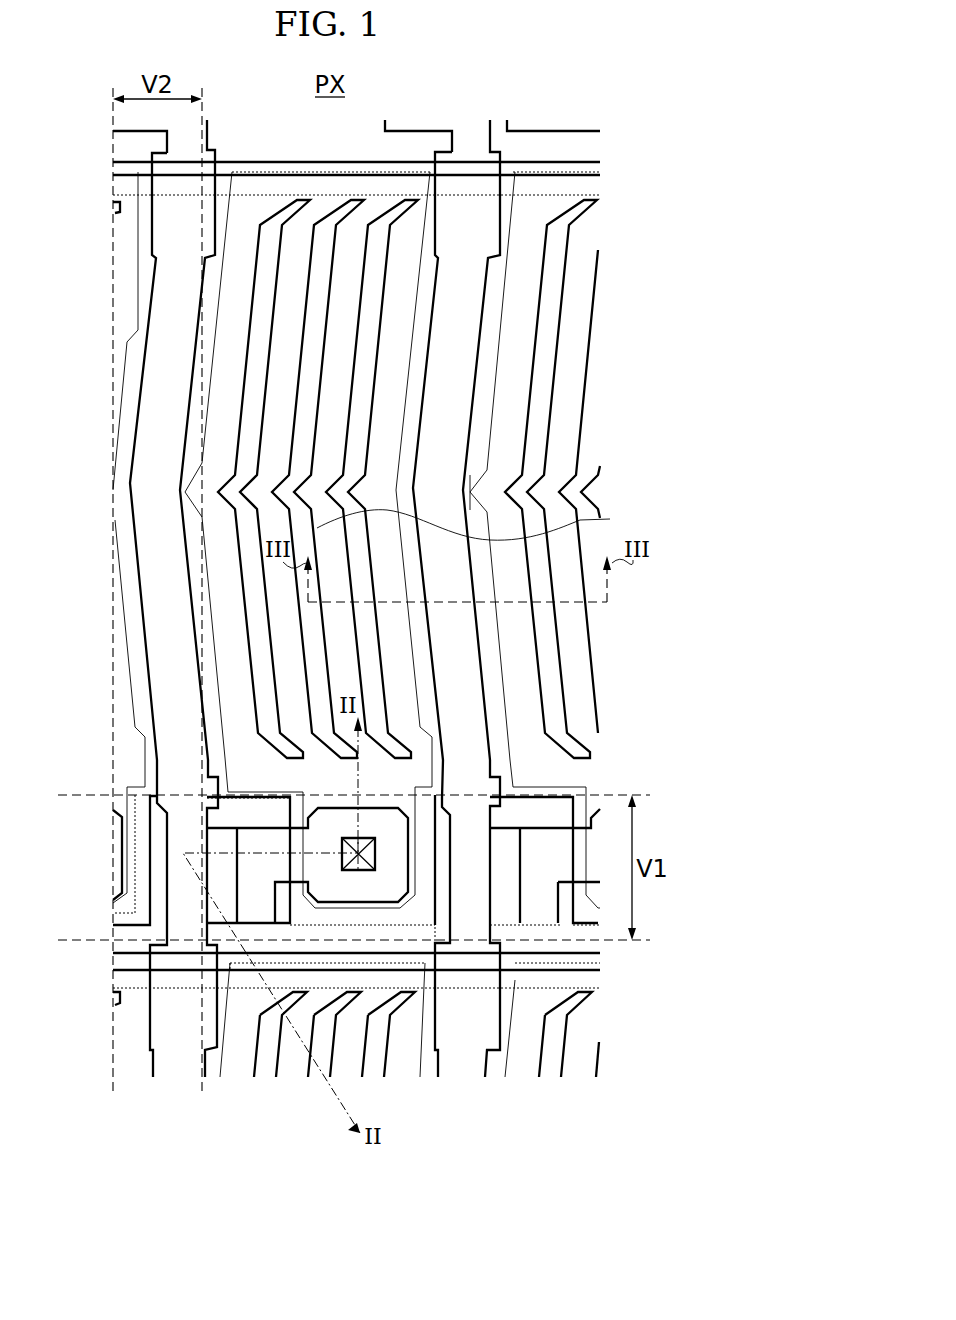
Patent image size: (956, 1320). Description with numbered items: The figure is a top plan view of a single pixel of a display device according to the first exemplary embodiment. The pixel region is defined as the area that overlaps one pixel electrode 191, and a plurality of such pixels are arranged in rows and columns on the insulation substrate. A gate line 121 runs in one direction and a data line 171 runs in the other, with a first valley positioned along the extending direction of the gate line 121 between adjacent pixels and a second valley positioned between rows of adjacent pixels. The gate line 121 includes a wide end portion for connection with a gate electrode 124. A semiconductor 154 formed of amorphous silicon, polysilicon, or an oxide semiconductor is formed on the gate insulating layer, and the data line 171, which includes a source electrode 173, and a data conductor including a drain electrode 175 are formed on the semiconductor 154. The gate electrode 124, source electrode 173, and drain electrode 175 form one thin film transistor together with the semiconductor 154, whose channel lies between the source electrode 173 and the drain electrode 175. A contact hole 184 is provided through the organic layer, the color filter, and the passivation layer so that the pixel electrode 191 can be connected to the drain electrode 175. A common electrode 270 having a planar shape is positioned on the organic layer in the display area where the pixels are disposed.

The data line 171 is at (133, 525).
The pixel electrode 191 is at (410, 375).
The common electrode 270 is at (487, 507).
The gate electrode 124 is at (153, 880).
The semiconductor 154 is at (212, 960).
The source electrode 173 is at (240, 905).
The drain electrode 175 is at (275, 923).
The gate line 121 is at (338, 962).
The contact hole 184 is at (362, 870).